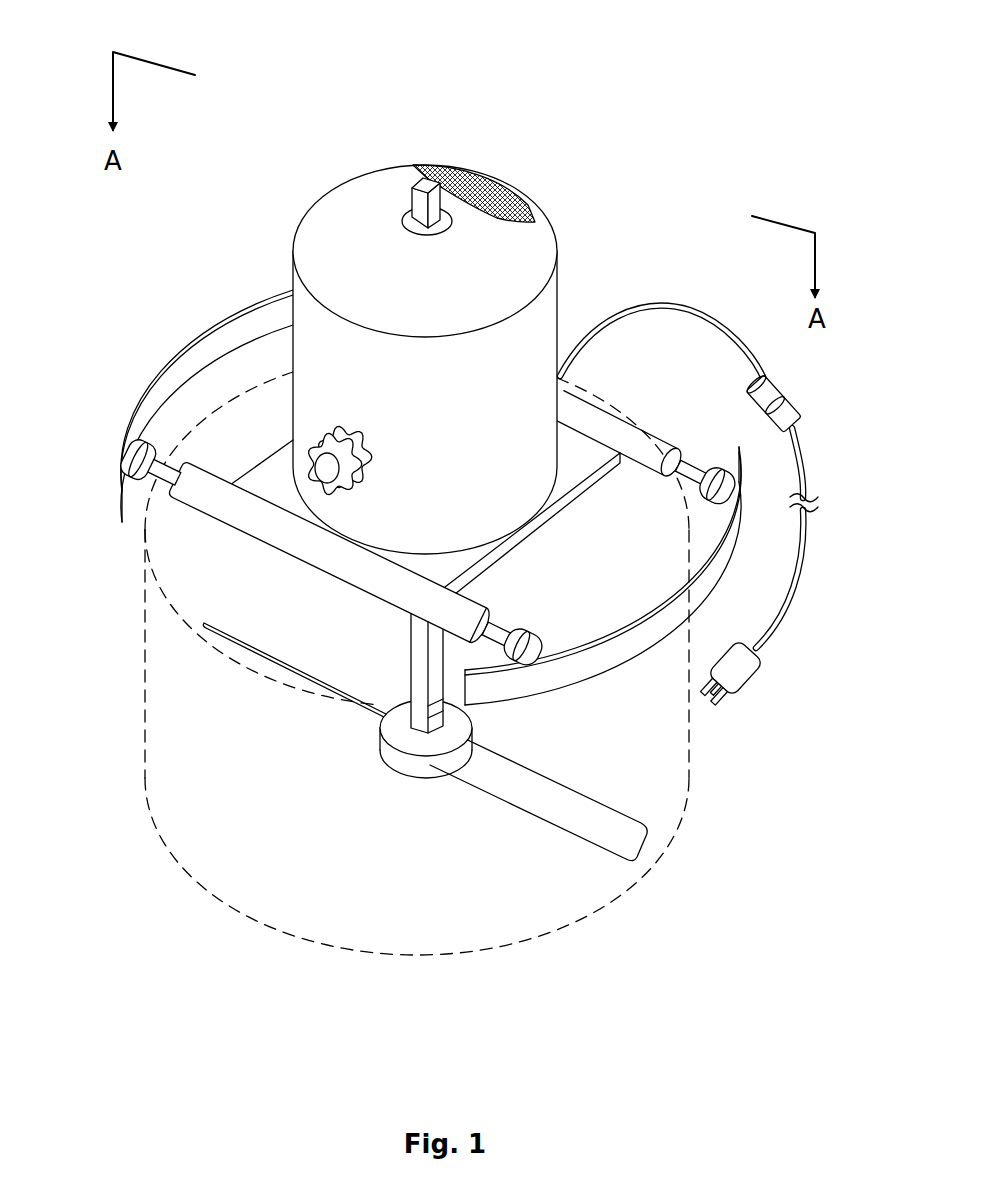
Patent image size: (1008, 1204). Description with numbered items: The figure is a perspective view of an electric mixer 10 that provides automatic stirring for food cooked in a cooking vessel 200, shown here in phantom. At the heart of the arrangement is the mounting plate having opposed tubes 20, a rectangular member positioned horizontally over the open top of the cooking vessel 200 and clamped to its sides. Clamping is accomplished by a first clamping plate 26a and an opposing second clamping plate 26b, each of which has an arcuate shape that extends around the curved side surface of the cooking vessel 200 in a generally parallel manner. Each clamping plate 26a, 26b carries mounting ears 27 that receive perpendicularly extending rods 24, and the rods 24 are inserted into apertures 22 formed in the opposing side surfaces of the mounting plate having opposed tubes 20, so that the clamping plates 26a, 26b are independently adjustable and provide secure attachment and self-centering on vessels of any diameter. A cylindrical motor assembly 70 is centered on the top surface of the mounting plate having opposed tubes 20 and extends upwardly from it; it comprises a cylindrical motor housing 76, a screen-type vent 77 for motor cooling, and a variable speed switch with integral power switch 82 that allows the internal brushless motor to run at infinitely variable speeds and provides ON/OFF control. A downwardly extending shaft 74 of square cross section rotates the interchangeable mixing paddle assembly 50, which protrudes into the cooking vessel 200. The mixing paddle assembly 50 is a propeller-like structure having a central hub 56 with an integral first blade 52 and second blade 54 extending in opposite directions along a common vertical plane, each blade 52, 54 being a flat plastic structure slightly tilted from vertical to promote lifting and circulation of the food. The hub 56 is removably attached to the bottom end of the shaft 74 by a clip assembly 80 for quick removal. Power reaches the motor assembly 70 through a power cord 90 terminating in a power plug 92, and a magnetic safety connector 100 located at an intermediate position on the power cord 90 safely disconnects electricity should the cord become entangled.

The electric mixer 10 is at (580, 92).
The mounting plate having opposed tubes 20 is at (316, 549).
The aperture 22 is at (490, 609).
The rod 24 is at (505, 636).
The first clamping plate 26a is at (245, 300).
The second clamping plate 26b is at (706, 591).
The mounting ear 27 is at (133, 460).
The mixing paddle assembly 50 is at (374, 746).
The first blade 52 is at (250, 652).
The second blade 54 is at (530, 790).
The hub 56 is at (400, 766).
The motor assembly 70 is at (460, 295).
The shaft 74 is at (420, 196).
The motor housing 76 is at (563, 292).
The vent 77 is at (437, 178).
The clip assembly 80 is at (436, 724).
The variable speed switch with integral power switch 82 is at (330, 455).
The power cord 90 is at (673, 305).
The power plug with low voltage transformer 92 is at (748, 678).
The safety connector 100 is at (787, 410).
The cooking vessel 200 is at (690, 784).